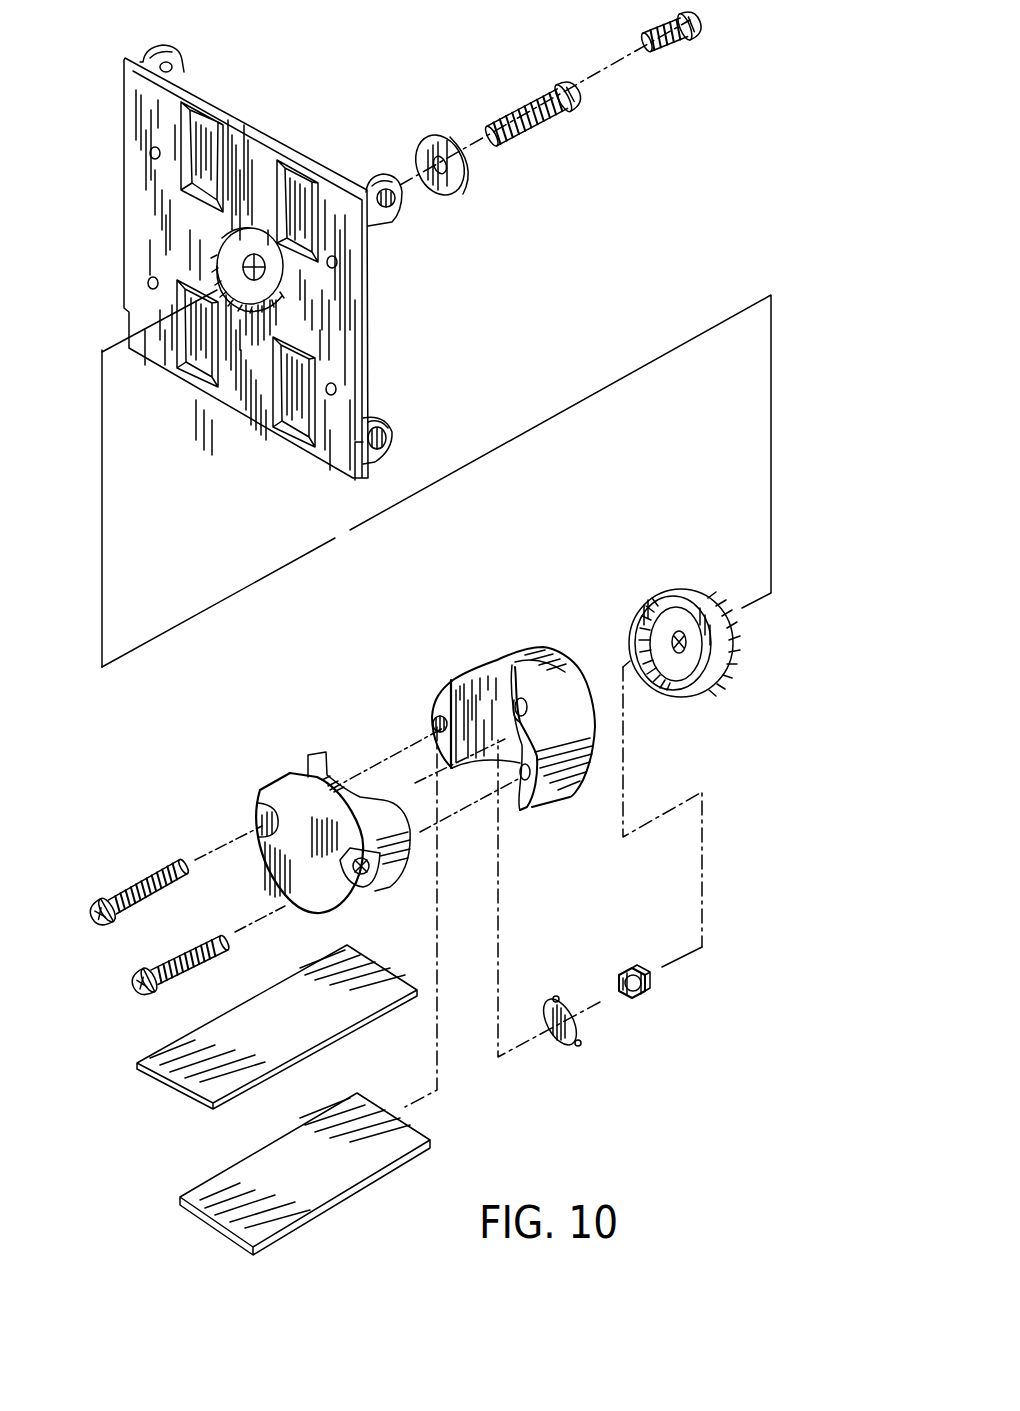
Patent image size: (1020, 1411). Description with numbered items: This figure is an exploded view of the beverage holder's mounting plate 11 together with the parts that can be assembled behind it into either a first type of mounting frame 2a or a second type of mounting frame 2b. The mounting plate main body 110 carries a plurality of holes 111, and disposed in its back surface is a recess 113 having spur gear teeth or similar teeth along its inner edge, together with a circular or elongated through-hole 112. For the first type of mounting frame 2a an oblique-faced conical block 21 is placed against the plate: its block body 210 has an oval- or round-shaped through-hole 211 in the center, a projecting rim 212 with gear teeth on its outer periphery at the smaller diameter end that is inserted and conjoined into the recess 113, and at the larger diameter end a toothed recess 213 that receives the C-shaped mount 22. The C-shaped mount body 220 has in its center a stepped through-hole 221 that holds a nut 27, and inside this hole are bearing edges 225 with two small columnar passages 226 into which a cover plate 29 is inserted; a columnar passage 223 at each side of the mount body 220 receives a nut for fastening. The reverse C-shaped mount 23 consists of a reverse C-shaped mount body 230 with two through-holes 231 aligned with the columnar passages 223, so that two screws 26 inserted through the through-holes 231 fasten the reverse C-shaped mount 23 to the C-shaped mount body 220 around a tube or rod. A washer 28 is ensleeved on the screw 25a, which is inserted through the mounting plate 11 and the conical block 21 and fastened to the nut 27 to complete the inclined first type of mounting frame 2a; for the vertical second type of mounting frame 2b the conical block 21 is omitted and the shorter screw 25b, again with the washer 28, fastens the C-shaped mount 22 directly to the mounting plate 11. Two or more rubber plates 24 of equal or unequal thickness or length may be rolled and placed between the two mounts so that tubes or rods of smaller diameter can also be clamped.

The mounting plate 11 is at (298, 278).
The mounting plate main body 110 is at (298, 262).
The holes 111 is at (335, 388).
The through-hole 112 is at (326, 194).
The recess 113 is at (247, 242).
The first type of mounting frame 2a is at (368, 577).
The second type of mounting frame 2b is at (508, 565).
The oblique-faced conical block 21 is at (681, 616).
The block body 210 is at (712, 668).
The through-hole 211 is at (650, 641).
The projecting rim 212 is at (733, 643).
The recess 213 is at (675, 688).
The C-shaped mount 22 is at (518, 716).
The C-shaped mount body 220 is at (560, 752).
The stepped through-hole 221 is at (531, 703).
The columnar passage 223 is at (527, 803).
The bearing edges 225 is at (456, 692).
The small columnar passage 226 is at (516, 665).
The reverse C-shaped mount 23 is at (323, 828).
The reverse C-shaped mount body 230 is at (296, 843).
The through-holes 231 is at (372, 886).
The rubber plates 24 is at (176, 1097).
The screw 25a is at (540, 128).
The screw 25b is at (673, 50).
The screws 26 is at (137, 882).
The nut 27 is at (637, 999).
The washer 28 is at (470, 194).
The cover plate 29 is at (560, 1047).